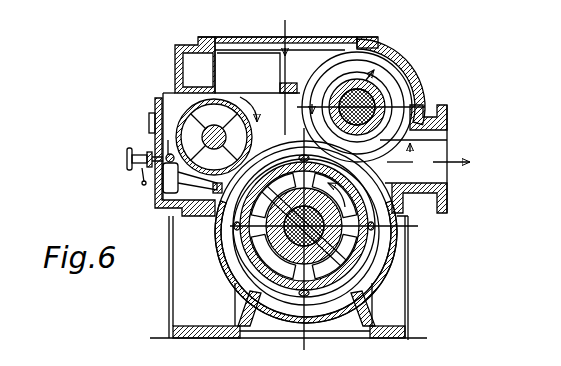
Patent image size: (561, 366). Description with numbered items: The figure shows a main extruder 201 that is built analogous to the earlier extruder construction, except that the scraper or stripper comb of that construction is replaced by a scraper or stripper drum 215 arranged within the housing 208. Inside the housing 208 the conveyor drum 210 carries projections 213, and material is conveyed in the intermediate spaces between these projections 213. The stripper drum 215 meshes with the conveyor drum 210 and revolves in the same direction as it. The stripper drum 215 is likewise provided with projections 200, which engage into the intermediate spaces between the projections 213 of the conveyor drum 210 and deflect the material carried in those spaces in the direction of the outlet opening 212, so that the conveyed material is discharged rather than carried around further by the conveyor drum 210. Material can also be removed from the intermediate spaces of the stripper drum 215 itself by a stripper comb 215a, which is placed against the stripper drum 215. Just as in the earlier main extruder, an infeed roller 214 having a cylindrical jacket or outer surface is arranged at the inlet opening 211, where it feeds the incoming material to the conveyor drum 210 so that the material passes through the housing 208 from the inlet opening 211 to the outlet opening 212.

The projections 200 is at (402, 92).
The main extruder 201 is at (150, 62).
The housing 208 is at (390, 273).
The conveyor drum 210 is at (376, 241).
The inlet opening 211 is at (310, 55).
The outlet opening 212 is at (437, 152).
The projections 213 is at (375, 280).
The infeed roller 214 is at (185, 122).
The stripper drum 215 is at (375, 58).
The stripper comb 215a is at (413, 150).